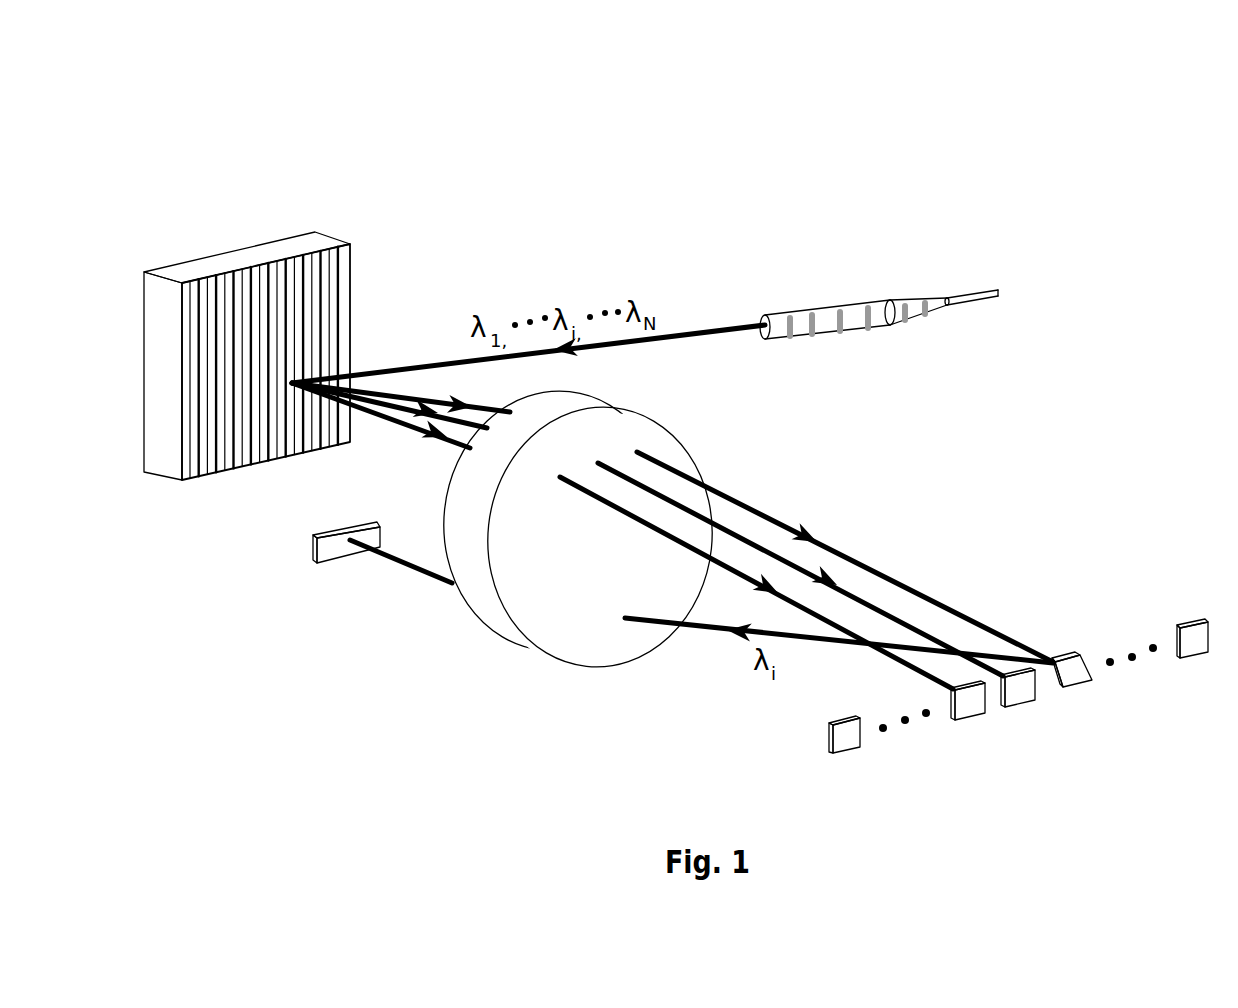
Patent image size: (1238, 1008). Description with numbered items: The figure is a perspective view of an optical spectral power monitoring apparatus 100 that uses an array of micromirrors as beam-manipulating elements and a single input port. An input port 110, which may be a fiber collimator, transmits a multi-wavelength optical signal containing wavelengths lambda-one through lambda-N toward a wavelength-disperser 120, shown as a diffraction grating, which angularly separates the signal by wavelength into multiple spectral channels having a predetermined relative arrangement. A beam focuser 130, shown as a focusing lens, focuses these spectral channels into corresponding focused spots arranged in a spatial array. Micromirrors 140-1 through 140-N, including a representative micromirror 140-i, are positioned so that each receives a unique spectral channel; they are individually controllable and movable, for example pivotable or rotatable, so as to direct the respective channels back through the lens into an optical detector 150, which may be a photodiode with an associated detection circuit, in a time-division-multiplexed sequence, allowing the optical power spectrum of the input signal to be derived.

The optical spectral power monitoring apparatus 100 is at (236, 130).
The input port 110 is at (863, 300).
The wavelength-disperser 120 is at (320, 250).
The beam focuser 130 is at (483, 628).
The micromirror 140-1 is at (830, 745).
The micromirror 140-i is at (1080, 687).
The micromirror 140-N is at (1205, 655).
The optical detector 150 is at (327, 567).